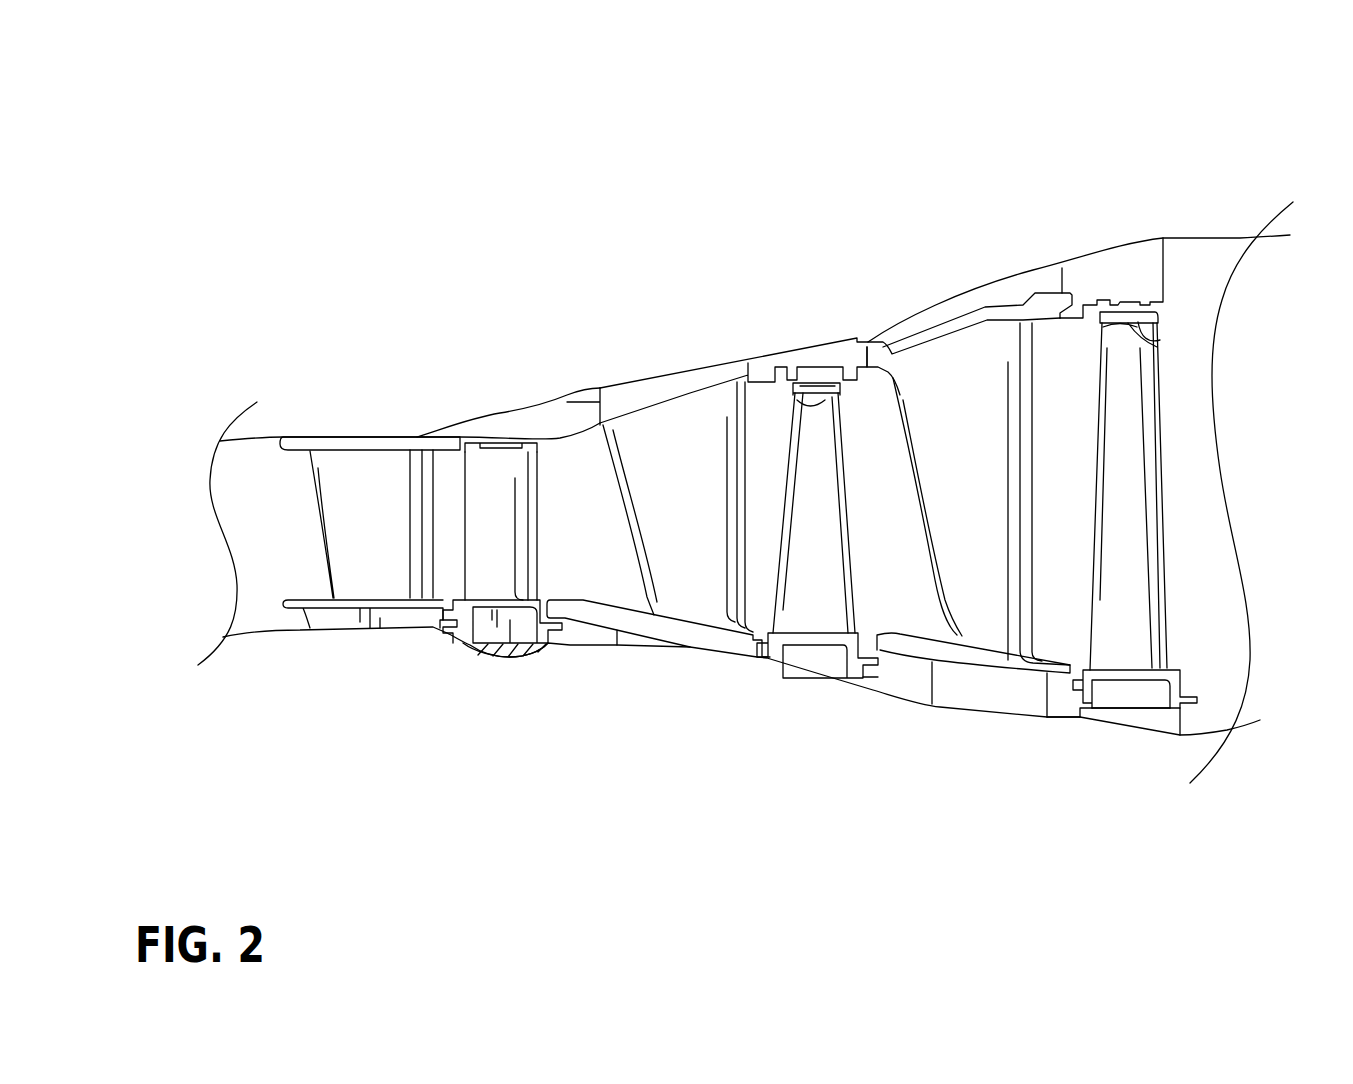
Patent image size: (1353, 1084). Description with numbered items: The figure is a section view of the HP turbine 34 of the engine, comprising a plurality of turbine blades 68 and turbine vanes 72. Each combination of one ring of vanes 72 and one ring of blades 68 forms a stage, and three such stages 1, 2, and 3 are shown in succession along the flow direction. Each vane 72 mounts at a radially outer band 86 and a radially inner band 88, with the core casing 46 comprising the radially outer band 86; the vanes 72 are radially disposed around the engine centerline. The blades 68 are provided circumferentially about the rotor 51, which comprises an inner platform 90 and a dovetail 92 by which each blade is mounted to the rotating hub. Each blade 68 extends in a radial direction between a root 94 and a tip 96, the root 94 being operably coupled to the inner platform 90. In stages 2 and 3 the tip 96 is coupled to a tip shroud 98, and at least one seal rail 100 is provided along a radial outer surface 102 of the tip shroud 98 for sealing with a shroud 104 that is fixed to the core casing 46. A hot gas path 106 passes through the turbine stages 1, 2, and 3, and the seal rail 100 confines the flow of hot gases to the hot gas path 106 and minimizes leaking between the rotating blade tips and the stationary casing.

The HP turbine 34 is at (853, 127).
The stage 1 is at (548, 232).
The stage 2 is at (868, 226).
The stage 3 is at (1245, 173).
The core casing 46 is at (1028, 272).
The shroud 104 is at (1128, 275).
The radially outer band 86 is at (330, 440).
The turbine vane 72 is at (690, 494).
The radially inner band 88 is at (352, 615).
The turbine blade 68 is at (505, 568).
The tip 96 is at (500, 447).
The tip shroud 98 is at (793, 388).
The seal rail 100 is at (845, 413).
The radial outer surface 102 is at (1133, 350).
The inner platform 90 is at (465, 610).
The dovetail 92 is at (1143, 697).
The rotor 51 is at (507, 648).
The root 94 is at (520, 603).
The hot gas path 106 is at (292, 527).